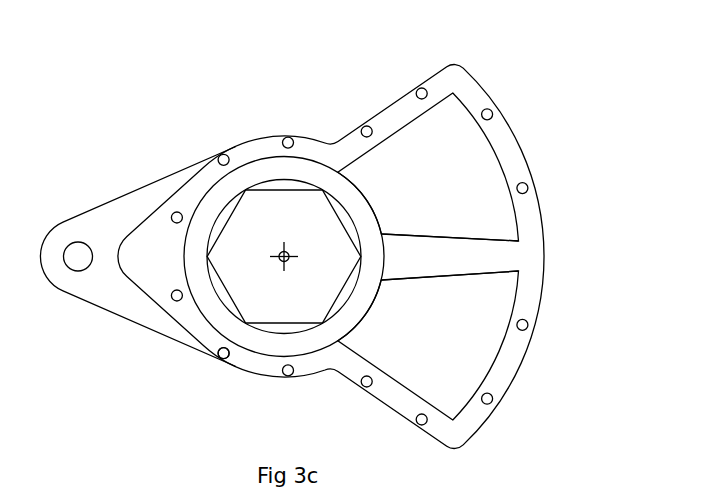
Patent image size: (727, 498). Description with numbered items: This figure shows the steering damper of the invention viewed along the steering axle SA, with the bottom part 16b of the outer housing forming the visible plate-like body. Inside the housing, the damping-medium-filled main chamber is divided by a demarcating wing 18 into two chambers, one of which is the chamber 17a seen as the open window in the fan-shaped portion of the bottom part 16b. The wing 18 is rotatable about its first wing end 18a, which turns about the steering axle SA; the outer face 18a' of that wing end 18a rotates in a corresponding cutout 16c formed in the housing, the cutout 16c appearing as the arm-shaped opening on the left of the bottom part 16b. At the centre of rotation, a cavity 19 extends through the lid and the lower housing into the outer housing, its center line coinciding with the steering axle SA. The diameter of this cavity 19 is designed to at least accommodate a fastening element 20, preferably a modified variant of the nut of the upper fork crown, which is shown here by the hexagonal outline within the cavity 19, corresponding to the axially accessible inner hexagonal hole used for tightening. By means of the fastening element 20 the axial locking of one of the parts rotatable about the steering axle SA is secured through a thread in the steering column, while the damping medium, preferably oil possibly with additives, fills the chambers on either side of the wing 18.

The bottom part 16b is at (502, 72).
The cutout 16c is at (184, 256).
The chamber 17a is at (450, 173).
The demarcating wing 18 is at (483, 256).
The first wing end 18a is at (199, 378).
The outer face of the wing end 18a' is at (124, 302).
The cavity 19 is at (295, 222).
The fastening element 20 is at (295, 222).
The steering axle SA is at (281, 251).